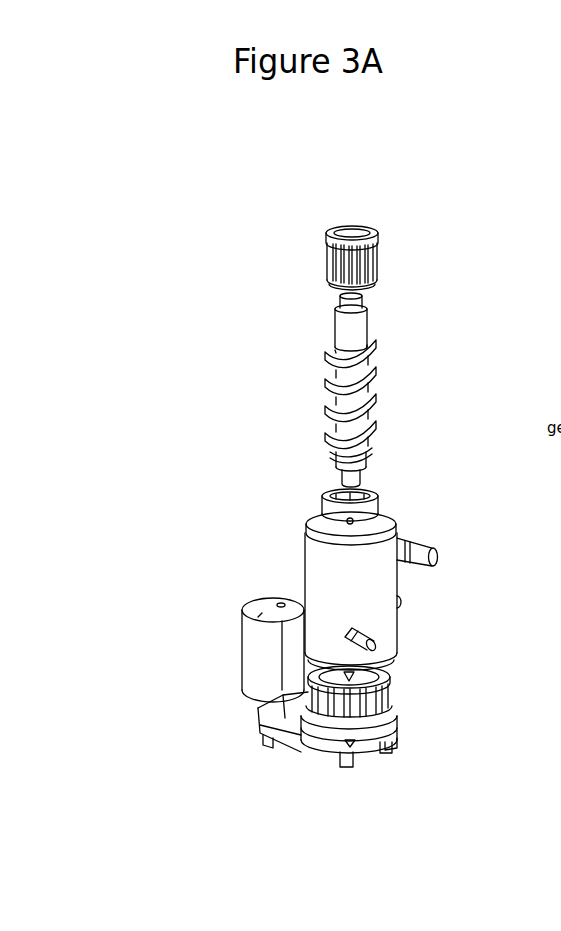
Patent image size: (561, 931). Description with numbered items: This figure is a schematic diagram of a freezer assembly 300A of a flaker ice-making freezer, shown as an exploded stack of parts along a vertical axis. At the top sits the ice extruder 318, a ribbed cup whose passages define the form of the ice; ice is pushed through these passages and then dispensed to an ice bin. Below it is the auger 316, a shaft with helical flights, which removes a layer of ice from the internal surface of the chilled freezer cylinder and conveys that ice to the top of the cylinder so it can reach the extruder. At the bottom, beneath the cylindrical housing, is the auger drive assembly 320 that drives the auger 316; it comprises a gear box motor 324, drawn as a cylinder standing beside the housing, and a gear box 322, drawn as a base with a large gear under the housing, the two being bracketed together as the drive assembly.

The freezer assembly 300A is at (487, 130).
The ice extruder 318 is at (382, 255).
The auger 316 is at (373, 385).
The auger drive assembly 320 is at (235, 741).
The gear box motor 324 is at (263, 600).
The gear box 322 is at (323, 747).